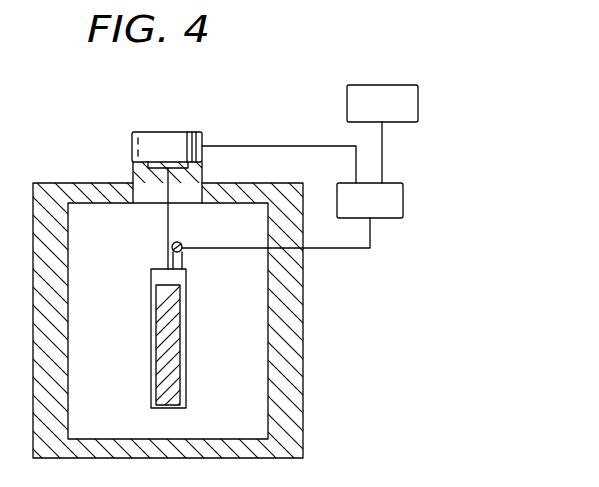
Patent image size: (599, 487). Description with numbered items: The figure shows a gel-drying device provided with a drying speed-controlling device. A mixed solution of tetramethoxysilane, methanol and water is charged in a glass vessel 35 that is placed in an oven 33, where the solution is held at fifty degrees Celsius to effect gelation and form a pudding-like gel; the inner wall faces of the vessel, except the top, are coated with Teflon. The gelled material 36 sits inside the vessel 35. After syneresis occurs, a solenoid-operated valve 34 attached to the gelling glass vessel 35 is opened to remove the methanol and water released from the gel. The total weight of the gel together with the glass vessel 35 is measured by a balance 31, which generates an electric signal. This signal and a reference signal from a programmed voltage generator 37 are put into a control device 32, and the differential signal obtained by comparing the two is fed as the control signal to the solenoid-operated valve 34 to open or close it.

The balance 31 is at (168, 142).
The control device 32 is at (398, 203).
The oven 33 is at (293, 318).
The solenoid-operated valve 34 is at (184, 252).
The glass vessel 35 is at (187, 339).
The sample material 36 is at (173, 386).
The programmed voltage generator 37 is at (405, 100).